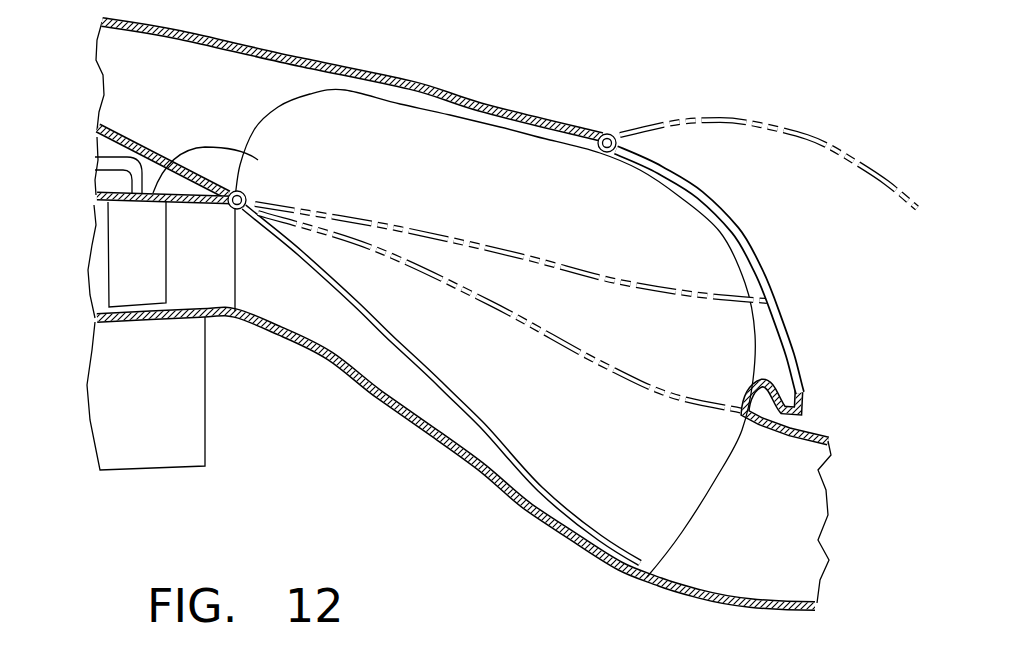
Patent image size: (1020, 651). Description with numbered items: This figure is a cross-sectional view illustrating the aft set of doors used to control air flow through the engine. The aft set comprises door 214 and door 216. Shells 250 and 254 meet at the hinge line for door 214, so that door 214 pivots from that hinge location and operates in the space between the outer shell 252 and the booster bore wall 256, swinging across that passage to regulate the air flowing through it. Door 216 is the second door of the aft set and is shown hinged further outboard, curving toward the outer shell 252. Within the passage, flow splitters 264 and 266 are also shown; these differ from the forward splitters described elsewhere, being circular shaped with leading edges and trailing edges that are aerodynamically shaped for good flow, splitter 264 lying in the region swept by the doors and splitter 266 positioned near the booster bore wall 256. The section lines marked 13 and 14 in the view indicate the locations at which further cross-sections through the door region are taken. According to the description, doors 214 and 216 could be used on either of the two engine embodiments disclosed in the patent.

The outer shell 252 is at (203, 38).
The shell 250 is at (141, 134).
The shell 254 is at (258, 160).
The flow splitter 264 is at (293, 100).
The flow splitter 266 is at (233, 268).
The booster bore wall 256 is at (298, 347).
The door 214 is at (507, 256).
The door 216 is at (734, 224).
The section line 13- 13 is at (640, 67).
The section line 14- 14 is at (773, 342).